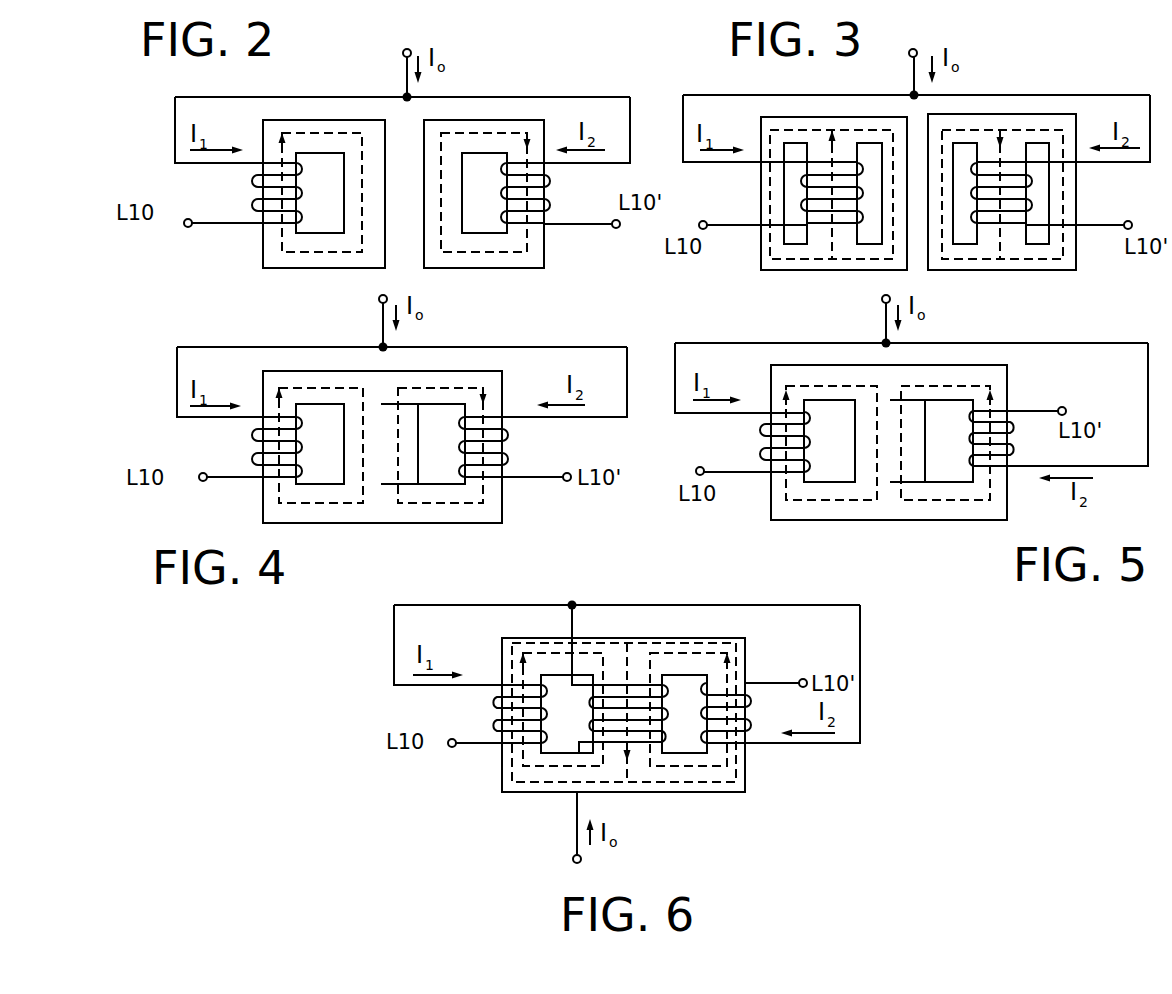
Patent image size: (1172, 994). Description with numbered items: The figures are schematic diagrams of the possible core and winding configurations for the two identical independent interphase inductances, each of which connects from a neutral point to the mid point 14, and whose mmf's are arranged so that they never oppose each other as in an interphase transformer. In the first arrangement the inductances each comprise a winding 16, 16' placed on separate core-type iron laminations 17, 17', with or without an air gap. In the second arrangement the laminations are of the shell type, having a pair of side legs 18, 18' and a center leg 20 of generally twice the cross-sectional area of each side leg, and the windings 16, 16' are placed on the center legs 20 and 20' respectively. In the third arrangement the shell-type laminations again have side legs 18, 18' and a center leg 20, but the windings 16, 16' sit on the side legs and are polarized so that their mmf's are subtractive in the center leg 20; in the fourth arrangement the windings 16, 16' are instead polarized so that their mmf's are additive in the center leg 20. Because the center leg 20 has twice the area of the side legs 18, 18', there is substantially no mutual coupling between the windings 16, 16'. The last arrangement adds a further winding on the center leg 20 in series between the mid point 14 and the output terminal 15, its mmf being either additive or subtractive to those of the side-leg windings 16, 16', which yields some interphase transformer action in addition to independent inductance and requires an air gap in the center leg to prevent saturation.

In FIG. 2, the mid point 14 is at (406, 100).
In FIG. 3, the mid point 14 is at (916, 97).
In FIG. 4, the mid point 14 is at (381, 342).
In FIG. 5, the mid point 14 is at (884, 340).
In FIG. 6, the mid point 14 is at (575, 602).
In FIG. 2, the output terminal 15 is at (402, 54).
In FIG. 3, the output terminal 15 is at (908, 54).
In FIG. 4, the output terminal 15 is at (378, 298).
In FIG. 5, the output terminal 15 is at (882, 298).
In FIG. 6, the output terminal 15 is at (572, 857).
In FIG. 2, the winding 16 is at (252, 193).
In FIG. 3, the winding 16 is at (798, 193).
In FIG. 4, the winding 16 is at (254, 447).
In FIG. 5, the winding 16 is at (805, 442).
In FIG. 6, the winding 16 is at (500, 714).
In FIG. 2, the winding 16' is at (553, 193).
In FIG. 3, the winding 16' is at (1047, 193).
In FIG. 4, the winding 16' is at (513, 447).
In FIG. 5, the winding 16' is at (970, 438).
In FIG. 6, the winding 16' is at (753, 713).
In FIG. 2, the core-type iron lamination 17 is at (293, 197).
In FIG. 2, the core-type iron lamination 17' is at (515, 197).
In FIG. 3, the side leg 18 is at (855, 214).
In FIG. 4, the side leg 18 is at (355, 447).
In FIG. 5, the side leg 18 is at (866, 451).
In FIG. 6, the side leg 18 is at (598, 721).
In FIG. 3, the side leg 18' is at (1018, 209).
In FIG. 4, the side leg 18' is at (485, 455).
In FIG. 5, the side leg 18' is at (980, 451).
In FIG. 6, the side leg 18' is at (729, 728).
In FIG. 3, the center leg 20 is at (834, 219).
In FIG. 4, the center leg 20 is at (395, 479).
In FIG. 5, the center leg 20 is at (905, 476).
In FIG. 6, the center leg 20 is at (632, 735).
In FIG. 3, the center leg 20' is at (1019, 216).